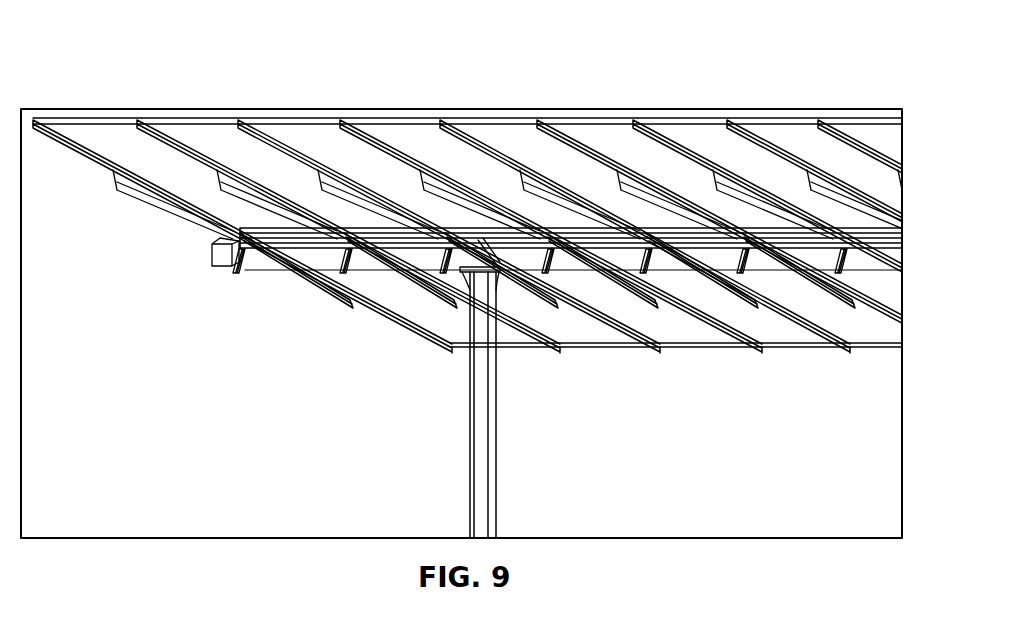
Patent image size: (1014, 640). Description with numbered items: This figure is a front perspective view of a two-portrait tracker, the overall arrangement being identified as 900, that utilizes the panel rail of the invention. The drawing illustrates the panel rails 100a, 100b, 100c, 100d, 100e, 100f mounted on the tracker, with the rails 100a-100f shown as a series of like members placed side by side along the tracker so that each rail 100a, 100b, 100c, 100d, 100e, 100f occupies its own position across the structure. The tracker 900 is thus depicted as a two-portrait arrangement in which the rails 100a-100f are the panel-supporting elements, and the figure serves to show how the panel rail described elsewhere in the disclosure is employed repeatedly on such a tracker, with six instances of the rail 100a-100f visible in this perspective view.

The solar tracker array system 900 is at (786, 57).
The panel rail 100a is at (325, 297).
The panel rail 100b is at (420, 292).
The panel rail 100c is at (538, 302).
The panel rail 100d is at (633, 297).
The panel rail 100e is at (733, 297).
The panel rail 100f is at (812, 293).